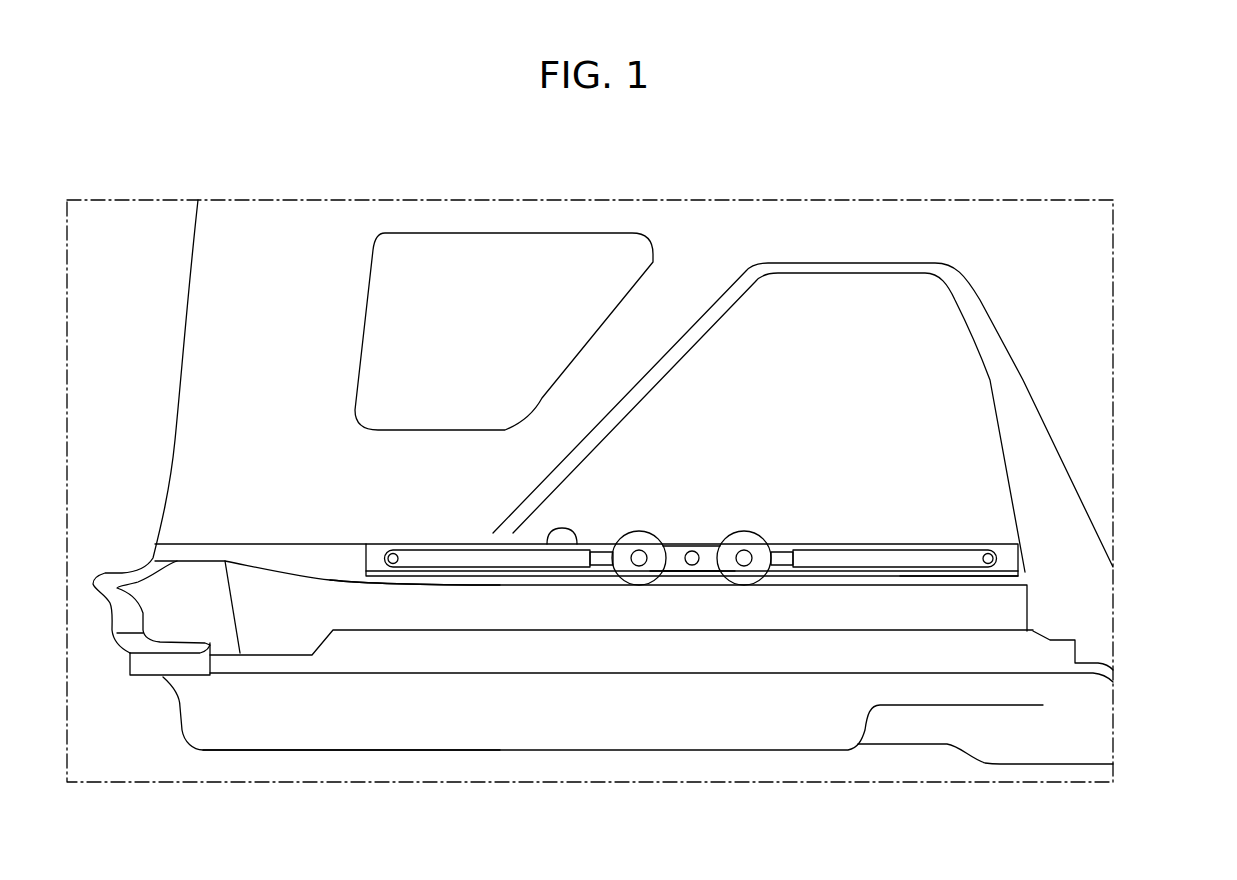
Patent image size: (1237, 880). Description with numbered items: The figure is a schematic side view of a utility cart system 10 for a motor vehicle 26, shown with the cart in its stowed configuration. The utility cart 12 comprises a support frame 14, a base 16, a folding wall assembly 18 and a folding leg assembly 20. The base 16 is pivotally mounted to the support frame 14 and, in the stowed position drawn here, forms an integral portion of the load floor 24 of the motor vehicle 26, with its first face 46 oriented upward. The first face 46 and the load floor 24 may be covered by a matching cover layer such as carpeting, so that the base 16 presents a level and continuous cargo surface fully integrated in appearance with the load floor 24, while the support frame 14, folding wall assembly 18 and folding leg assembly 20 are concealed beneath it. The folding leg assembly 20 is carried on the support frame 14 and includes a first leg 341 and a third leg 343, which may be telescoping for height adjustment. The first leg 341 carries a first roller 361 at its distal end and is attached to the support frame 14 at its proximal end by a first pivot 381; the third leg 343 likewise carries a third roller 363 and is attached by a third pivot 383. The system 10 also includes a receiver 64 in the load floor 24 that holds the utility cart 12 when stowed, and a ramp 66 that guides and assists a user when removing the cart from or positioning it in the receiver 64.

The utility cart system 10 is at (293, 420).
The utility cart 12 is at (822, 492).
The support frame 14 is at (1010, 563).
The base 16 is at (681, 543).
The folding wall assembly 18 is at (706, 580).
The folding leg assembly 20 is at (437, 592).
The load floor 24 is at (233, 543).
The motor vehicle 26 is at (207, 713).
The first leg 341 is at (866, 556).
The third leg 343 is at (462, 556).
The first roller 361 is at (749, 531).
The third roller 363 is at (638, 531).
The first pivot 381 is at (996, 546).
The third pivot 383 is at (393, 552).
The first face 46 is at (546, 544).
The receiver 64 is at (912, 583).
The ramp 66 is at (272, 563).